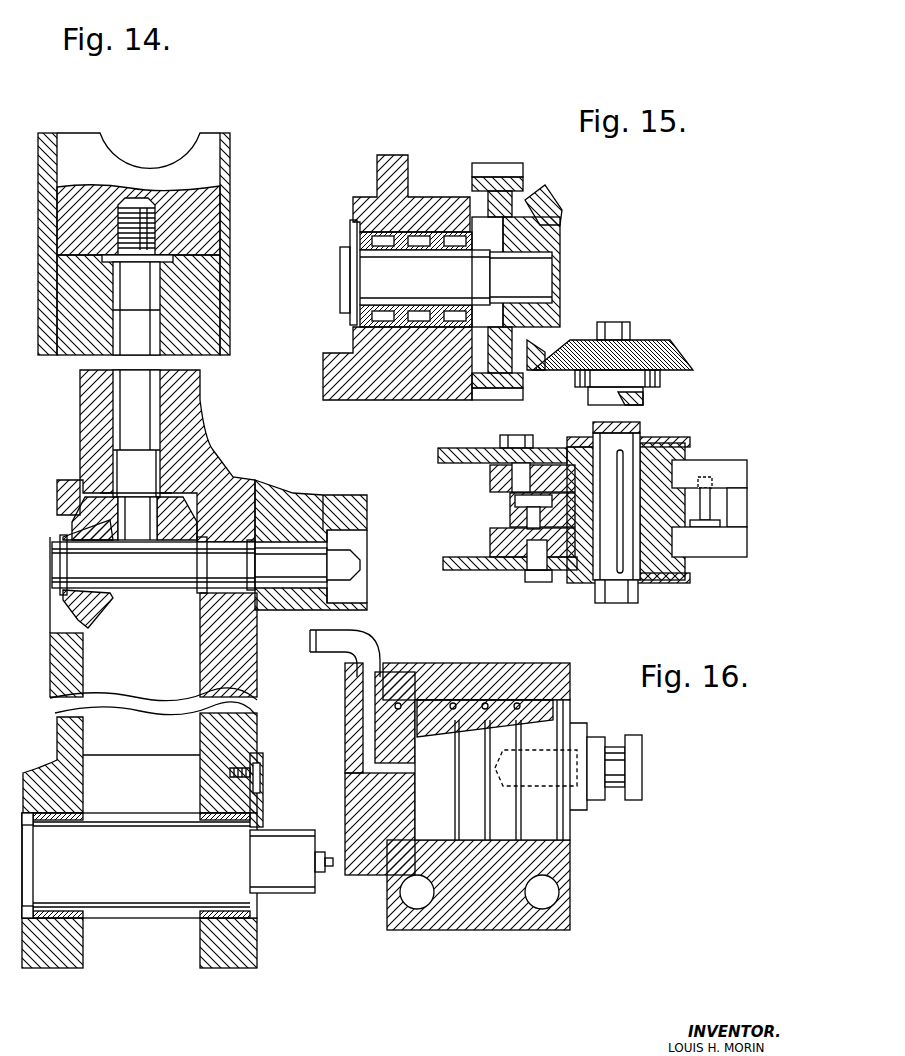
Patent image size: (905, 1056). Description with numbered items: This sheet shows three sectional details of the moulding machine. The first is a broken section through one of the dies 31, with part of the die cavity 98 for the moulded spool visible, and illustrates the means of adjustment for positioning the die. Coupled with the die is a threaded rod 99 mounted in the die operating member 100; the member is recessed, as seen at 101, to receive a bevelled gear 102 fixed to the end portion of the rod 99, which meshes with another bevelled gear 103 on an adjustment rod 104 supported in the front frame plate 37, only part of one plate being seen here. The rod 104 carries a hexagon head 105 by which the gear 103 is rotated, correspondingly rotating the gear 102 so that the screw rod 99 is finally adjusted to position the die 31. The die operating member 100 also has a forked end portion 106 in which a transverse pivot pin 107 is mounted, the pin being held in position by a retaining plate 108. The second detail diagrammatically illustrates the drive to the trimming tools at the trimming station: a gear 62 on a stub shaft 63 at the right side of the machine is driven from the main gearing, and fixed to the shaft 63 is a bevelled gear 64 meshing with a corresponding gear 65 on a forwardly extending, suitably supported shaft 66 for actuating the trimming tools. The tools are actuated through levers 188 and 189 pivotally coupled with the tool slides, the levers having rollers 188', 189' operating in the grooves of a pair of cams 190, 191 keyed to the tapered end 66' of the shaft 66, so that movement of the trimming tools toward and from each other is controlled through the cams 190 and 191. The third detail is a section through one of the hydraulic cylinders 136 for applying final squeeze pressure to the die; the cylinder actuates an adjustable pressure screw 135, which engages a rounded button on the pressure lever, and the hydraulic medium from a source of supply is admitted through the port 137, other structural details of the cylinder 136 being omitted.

In FIG. 14, the die 31 is at (210, 178).
In FIG. 14, the die cavity 98 is at (192, 150).
In FIG. 14, the threaded rod 99 is at (150, 235).
In FIG. 14, the die operating member 100 is at (188, 412).
In FIG. 14, the recess 101 is at (188, 490).
In FIG. 14, the bevelled gear 102 is at (175, 500).
In FIG. 14, the bevelled gear 103 is at (95, 617).
In FIG. 14, the adjustment rod 104 is at (290, 555).
In FIG. 14, the front frame plate 37 is at (318, 495).
In FIG. 14, the hexagon head 105 is at (350, 556).
In FIG. 14, the forked end portion 106 is at (240, 955).
In FIG. 14, the transverse pivot pin 107 is at (225, 882).
In FIG. 14, the retaining plate 108 is at (262, 816).
In FIG. 15, the gear 62 is at (523, 176).
In FIG. 15, the stub shaft 63 is at (375, 272).
In FIG. 15, the bevelled gear 64 is at (552, 208).
In FIG. 15, the bevelled gear 65 is at (683, 343).
In FIG. 15, the shaft 66 is at (647, 397).
In FIG. 15, the tapered end 66' is at (643, 509).
In FIG. 15, the lever 188 is at (492, 474).
In FIG. 15, the roller 188' is at (509, 480).
In FIG. 15, the lever 189 is at (510, 586).
In FIG. 15, the roller 189' is at (532, 572).
In FIG. 15, the cam 190 is at (730, 466).
In FIG. 15, the cam 191 is at (743, 534).
In FIG. 16, the adjustable pressure screw 135 is at (633, 802).
In FIG. 16, the hydraulic cylinder 136 is at (513, 664).
In FIG. 16, the port 137 is at (370, 698).